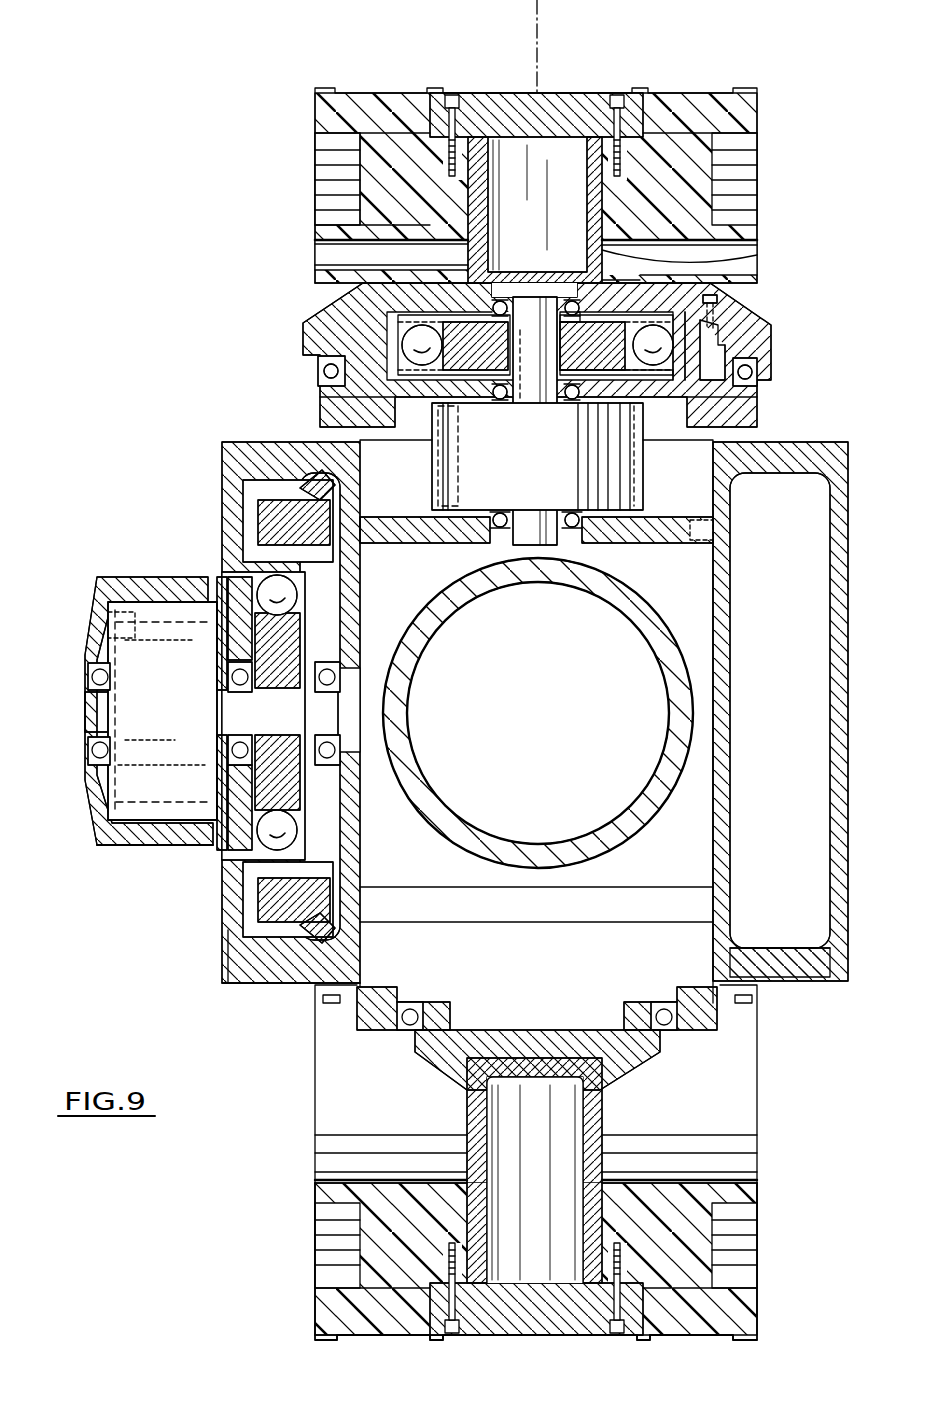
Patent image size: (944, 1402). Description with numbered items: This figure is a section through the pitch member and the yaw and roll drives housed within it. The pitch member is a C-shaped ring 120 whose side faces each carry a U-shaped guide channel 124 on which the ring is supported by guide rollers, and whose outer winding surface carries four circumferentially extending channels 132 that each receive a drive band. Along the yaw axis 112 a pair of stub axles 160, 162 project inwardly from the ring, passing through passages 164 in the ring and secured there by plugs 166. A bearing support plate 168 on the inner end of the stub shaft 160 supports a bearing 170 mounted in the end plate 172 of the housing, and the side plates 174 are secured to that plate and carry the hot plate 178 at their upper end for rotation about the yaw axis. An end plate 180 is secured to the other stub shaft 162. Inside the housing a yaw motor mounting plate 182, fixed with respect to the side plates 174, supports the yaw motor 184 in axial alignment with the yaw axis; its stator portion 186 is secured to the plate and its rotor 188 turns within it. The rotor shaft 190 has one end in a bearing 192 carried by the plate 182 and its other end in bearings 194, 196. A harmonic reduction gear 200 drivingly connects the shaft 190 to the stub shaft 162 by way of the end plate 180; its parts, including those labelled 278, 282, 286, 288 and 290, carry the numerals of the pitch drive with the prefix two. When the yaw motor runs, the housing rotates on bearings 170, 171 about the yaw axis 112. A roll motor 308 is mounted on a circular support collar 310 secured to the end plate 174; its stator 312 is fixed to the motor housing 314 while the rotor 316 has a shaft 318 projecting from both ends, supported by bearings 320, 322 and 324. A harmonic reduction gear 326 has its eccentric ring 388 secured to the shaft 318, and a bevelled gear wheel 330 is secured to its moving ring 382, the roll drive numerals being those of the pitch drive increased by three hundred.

The yaw axis 112 is at (540, 66).
The C-shaped ring 120 is at (318, 100).
The U-shaped guide channel 124 is at (330, 195).
The circumferentially extending channel 132 is at (393, 1338).
The stub axle 160 is at (600, 1128).
The stub axle 162 is at (600, 265).
The passage 164 is at (365, 215).
The plug 166 is at (480, 108).
The bearing support plate 168 is at (585, 1045).
The bearing 170 is at (415, 1000).
The bearing 171 is at (325, 375).
The end plate 172 is at (355, 990).
The side plate 174 is at (352, 928).
The hot plate 178 is at (318, 432).
The end plate 180 is at (322, 325).
The yaw motor mounting plate 182 is at (638, 545).
The yaw motor 184 is at (452, 452).
The stator portion 186 is at (443, 480).
The rotor 188 is at (643, 490).
The shaft 190 is at (537, 525).
The bearing 192 is at (495, 545).
The bearing 194 is at (505, 400).
The bearing 196 is at (572, 280).
The harmonic reduction gear 200 is at (680, 325).
The ball bearing 278 is at (365, 330).
The seal housing 282 is at (345, 358).
The retaining screw 286 is at (690, 320).
The bearing race 288 is at (630, 390).
The bearing retainer 290 is at (640, 400).
The roll motor 308 is at (160, 842).
The circular support collar 310 is at (285, 965).
The stator 312 is at (108, 840).
The motor housing 314 is at (92, 770).
The rotor 316 is at (155, 650).
The shaft 318 is at (100, 728).
The bearing 320 is at (95, 688).
The bearing 322 is at (285, 650).
The bearing 324 is at (355, 635).
The harmonic reduction gear 326 is at (275, 540).
The bevelled gear wheel 330 is at (350, 565).
The moving ring 382 is at (235, 470).
The eccentric ring 388 is at (250, 570).